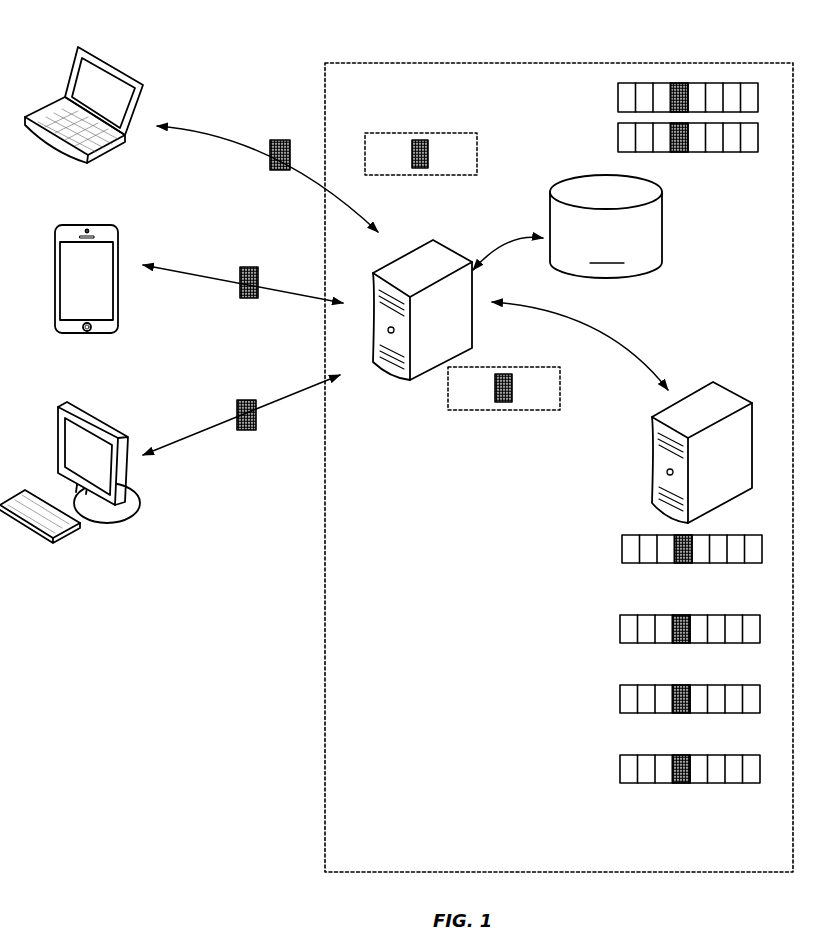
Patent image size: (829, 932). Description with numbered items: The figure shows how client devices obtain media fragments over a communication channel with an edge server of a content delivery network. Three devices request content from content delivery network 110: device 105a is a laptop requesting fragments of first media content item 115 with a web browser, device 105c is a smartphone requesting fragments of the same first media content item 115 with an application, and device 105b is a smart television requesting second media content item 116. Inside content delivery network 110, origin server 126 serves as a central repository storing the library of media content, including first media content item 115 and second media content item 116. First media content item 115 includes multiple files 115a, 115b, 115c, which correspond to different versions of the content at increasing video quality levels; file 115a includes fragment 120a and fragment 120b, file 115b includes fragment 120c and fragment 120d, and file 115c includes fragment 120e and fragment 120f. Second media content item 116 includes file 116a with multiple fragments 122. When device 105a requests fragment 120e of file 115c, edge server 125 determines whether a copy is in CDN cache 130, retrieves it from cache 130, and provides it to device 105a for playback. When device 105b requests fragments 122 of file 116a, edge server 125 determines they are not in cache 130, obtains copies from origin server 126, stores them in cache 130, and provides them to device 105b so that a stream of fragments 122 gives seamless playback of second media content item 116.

The laptop device 105a is at (108, 62).
The smart television device 105b is at (97, 420).
The smartphone device 105c is at (87, 226).
The content delivery network 110 is at (675, 61).
The first media content item 115 is at (505, 624).
The file 115a is at (604, 94).
The file 115b is at (605, 627).
The file 115c is at (604, 134).
The second media content item 116 is at (519, 753).
The file 116a is at (605, 755).
The fragment 120a is at (246, 267).
The fragment 120b is at (420, 168).
The fragment 120c is at (628, 643).
The fragment 120d is at (675, 643).
The fragment 120e is at (276, 140).
The fragment 120f is at (518, 402).
The fragments 122 is at (245, 400).
The edge server 125 is at (453, 256).
The origin server 126 is at (658, 413).
The CDN cache 130 is at (423, 133).